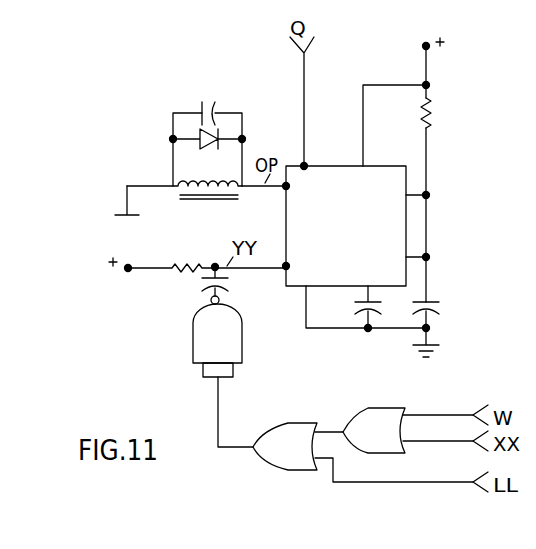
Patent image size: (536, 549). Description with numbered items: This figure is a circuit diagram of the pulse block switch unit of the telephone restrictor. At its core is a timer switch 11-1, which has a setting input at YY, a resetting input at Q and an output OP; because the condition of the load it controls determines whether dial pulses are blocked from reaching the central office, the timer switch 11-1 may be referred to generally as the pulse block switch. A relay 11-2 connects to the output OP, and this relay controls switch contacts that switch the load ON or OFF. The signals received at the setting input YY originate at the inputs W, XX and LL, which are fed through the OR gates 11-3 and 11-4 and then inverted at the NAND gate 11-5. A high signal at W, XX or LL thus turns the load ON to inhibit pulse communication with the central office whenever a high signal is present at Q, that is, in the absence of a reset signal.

The timer switch 11-1 is at (338, 168).
The relay 11-2 is at (179, 183).
The OR gate 11-3 is at (378, 415).
The OR gate 11-4 is at (294, 435).
The NAND gate 11-5 is at (232, 358).